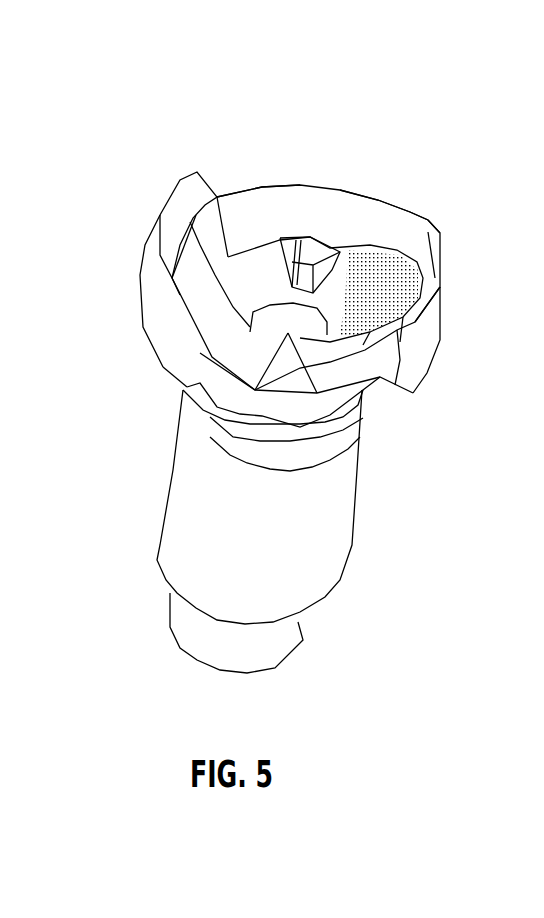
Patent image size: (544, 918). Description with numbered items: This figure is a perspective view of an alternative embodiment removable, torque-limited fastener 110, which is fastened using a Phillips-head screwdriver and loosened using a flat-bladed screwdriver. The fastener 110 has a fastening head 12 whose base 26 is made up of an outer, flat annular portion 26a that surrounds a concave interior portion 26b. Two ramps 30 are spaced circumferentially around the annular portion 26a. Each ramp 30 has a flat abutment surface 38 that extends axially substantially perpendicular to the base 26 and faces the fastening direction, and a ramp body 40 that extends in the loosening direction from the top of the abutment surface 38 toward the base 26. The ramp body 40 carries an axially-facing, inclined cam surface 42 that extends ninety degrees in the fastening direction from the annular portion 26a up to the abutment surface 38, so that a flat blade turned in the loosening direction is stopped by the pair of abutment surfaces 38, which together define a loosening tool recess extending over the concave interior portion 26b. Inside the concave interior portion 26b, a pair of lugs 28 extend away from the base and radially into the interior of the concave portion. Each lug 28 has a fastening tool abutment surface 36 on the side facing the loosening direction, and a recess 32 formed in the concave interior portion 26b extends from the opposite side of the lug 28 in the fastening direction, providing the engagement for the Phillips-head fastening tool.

The fastener 110 is at (409, 118).
The fastening head 12 is at (263, 407).
The base 26 is at (380, 377).
The annular portion 26a is at (257, 207).
The concave interior portion 26b is at (379, 281).
The lug 28 is at (297, 243).
The ramp 30 is at (157, 247).
The recess 32 is at (382, 283).
The fastening tool abutment surface 36 is at (293, 258).
The abutment surface 38 is at (219, 178).
The ramp body 40 is at (188, 208).
The cam surface 42 is at (193, 306).